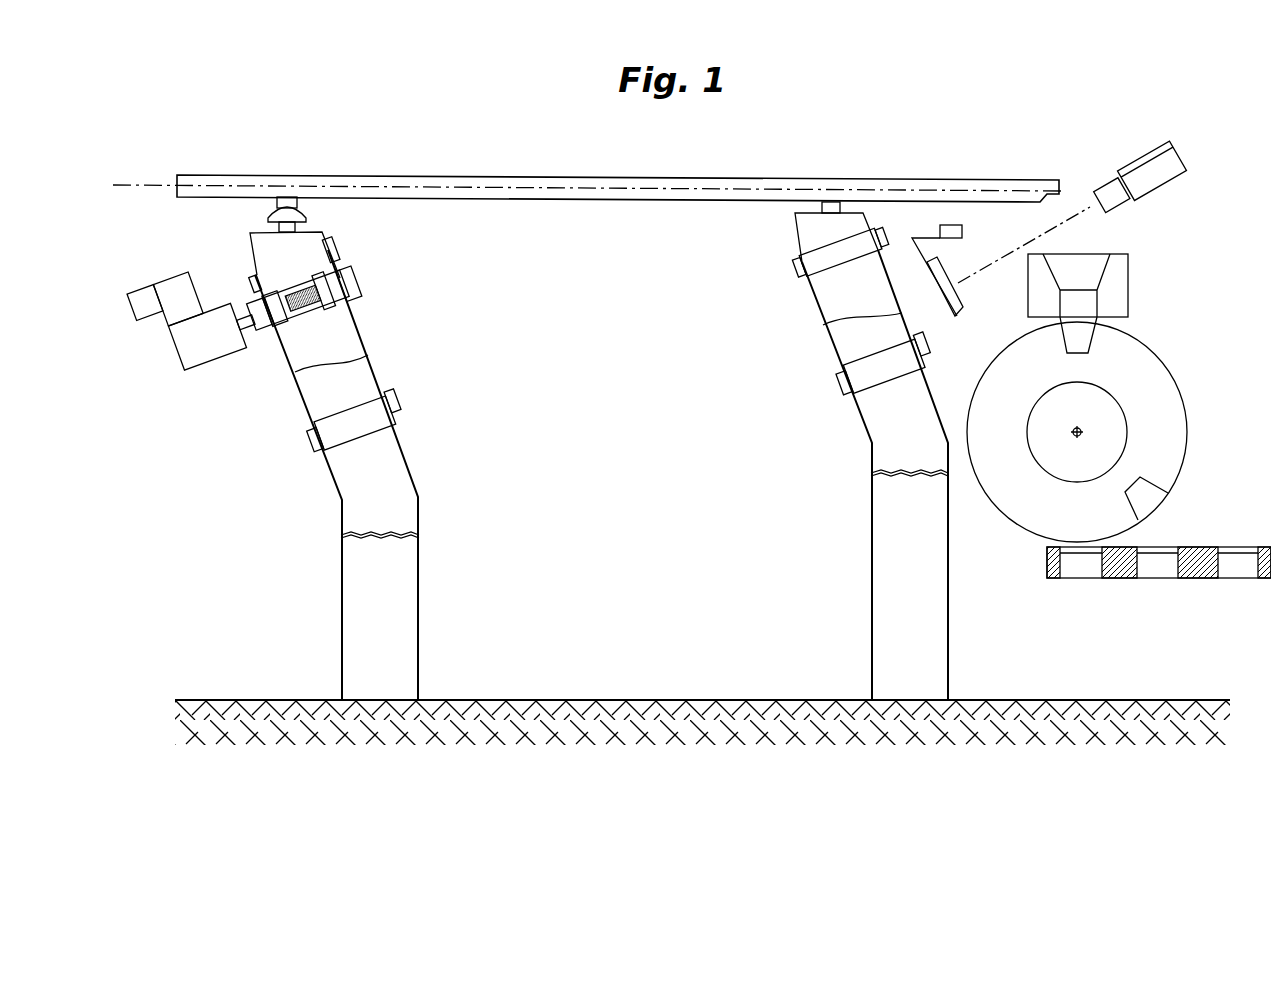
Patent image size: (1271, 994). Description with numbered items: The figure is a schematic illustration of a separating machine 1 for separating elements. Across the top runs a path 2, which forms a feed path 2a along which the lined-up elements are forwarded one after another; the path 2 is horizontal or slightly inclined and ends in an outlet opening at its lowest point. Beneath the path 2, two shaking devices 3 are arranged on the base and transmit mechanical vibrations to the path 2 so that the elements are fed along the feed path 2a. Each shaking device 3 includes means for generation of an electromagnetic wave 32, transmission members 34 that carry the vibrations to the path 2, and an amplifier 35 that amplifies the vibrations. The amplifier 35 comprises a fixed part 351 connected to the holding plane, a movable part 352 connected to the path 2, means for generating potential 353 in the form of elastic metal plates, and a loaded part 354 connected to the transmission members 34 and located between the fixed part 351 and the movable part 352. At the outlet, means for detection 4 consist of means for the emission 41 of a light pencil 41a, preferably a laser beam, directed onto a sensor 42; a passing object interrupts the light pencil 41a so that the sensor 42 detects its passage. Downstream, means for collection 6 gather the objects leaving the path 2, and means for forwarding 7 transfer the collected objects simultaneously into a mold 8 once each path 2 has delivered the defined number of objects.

The separating machine 1 is at (181, 111).
The path 2 is at (312, 174).
The feed path 2a is at (403, 184).
The shaking device 3 is at (372, 311).
The means for detection 4 is at (1100, 150).
The means for collection 6 is at (1162, 286).
The means for forwarding 7 is at (1196, 356).
The mold 8 is at (1204, 591).
The means for generation of an electromagnetic wave 32 is at (200, 352).
The transmission members 34 is at (262, 300).
The amplifier 35 is at (298, 404).
The means for the emission 41 is at (1118, 190).
The light pencil 41a is at (1074, 218).
The sensor 42 is at (963, 308).
The fixed part 351 is at (368, 427).
The movable part 352 is at (265, 268).
The means for generating potential 353 is at (370, 356).
The loaded part 354 is at (350, 283).